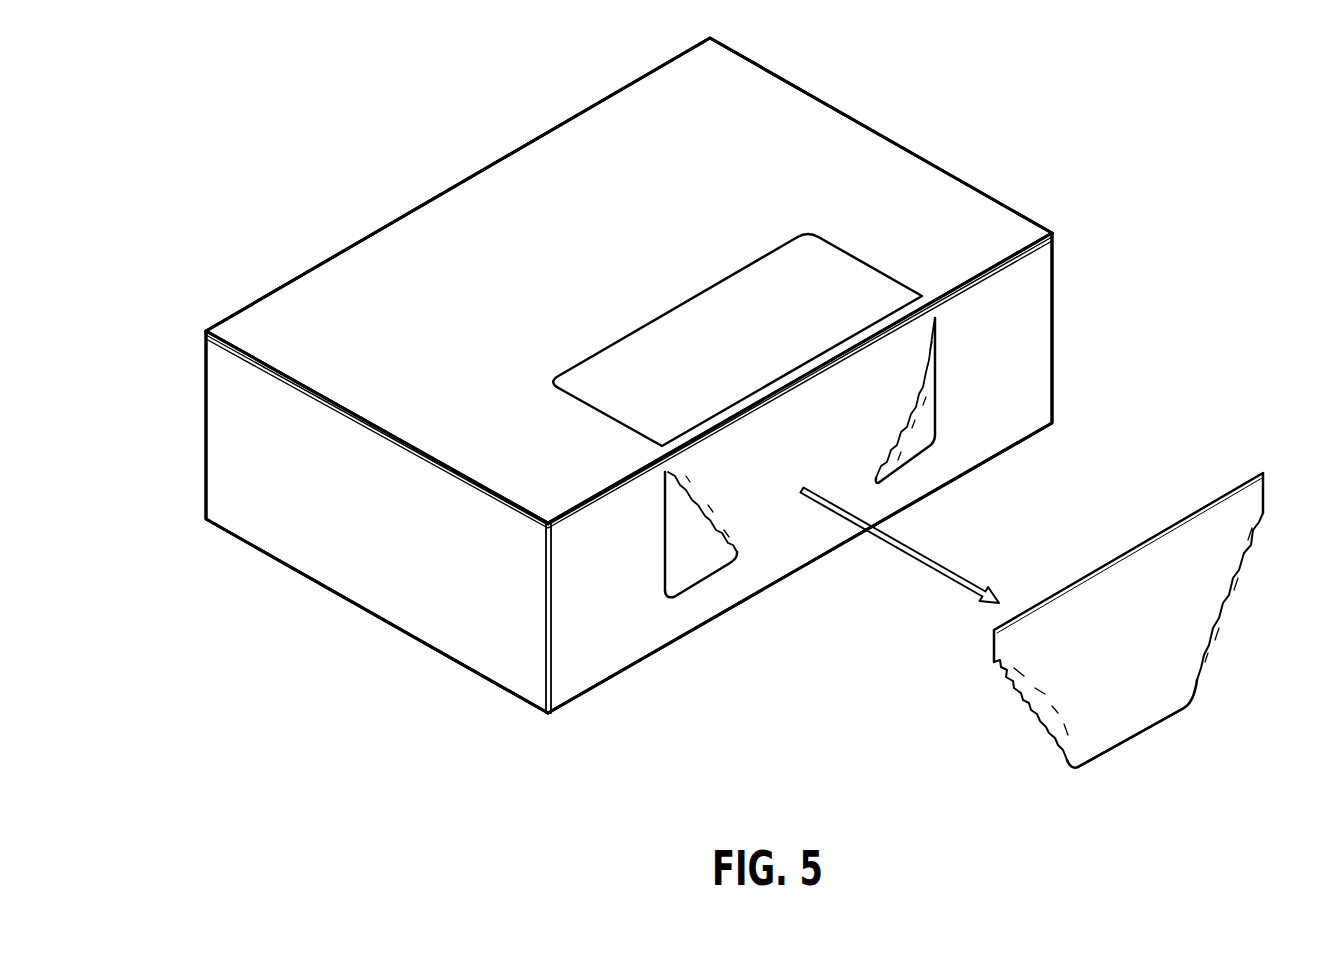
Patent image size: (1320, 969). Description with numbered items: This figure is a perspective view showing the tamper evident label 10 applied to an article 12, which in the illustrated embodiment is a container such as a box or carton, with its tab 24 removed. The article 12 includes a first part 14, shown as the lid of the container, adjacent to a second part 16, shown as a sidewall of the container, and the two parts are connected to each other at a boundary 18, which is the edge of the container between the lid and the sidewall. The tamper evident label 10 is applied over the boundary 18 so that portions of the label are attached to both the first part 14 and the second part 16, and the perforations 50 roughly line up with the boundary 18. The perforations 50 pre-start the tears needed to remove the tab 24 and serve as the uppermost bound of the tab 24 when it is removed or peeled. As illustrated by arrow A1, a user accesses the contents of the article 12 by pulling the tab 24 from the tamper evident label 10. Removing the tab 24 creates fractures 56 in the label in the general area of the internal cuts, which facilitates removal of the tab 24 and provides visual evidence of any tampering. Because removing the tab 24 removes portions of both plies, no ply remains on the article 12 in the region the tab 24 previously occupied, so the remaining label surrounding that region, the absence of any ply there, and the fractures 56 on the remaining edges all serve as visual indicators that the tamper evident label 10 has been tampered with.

The tamper evident label 10 is at (889, 266).
The article 12 is at (463, 177).
The first part 14 is at (600, 454).
The second part 16 is at (618, 566).
The boundary 18 is at (576, 511).
The tab 24 is at (1134, 735).
The perforations 50 is at (792, 376).
The fractures 56 is at (893, 430).
The arrow A1 is at (941, 567).